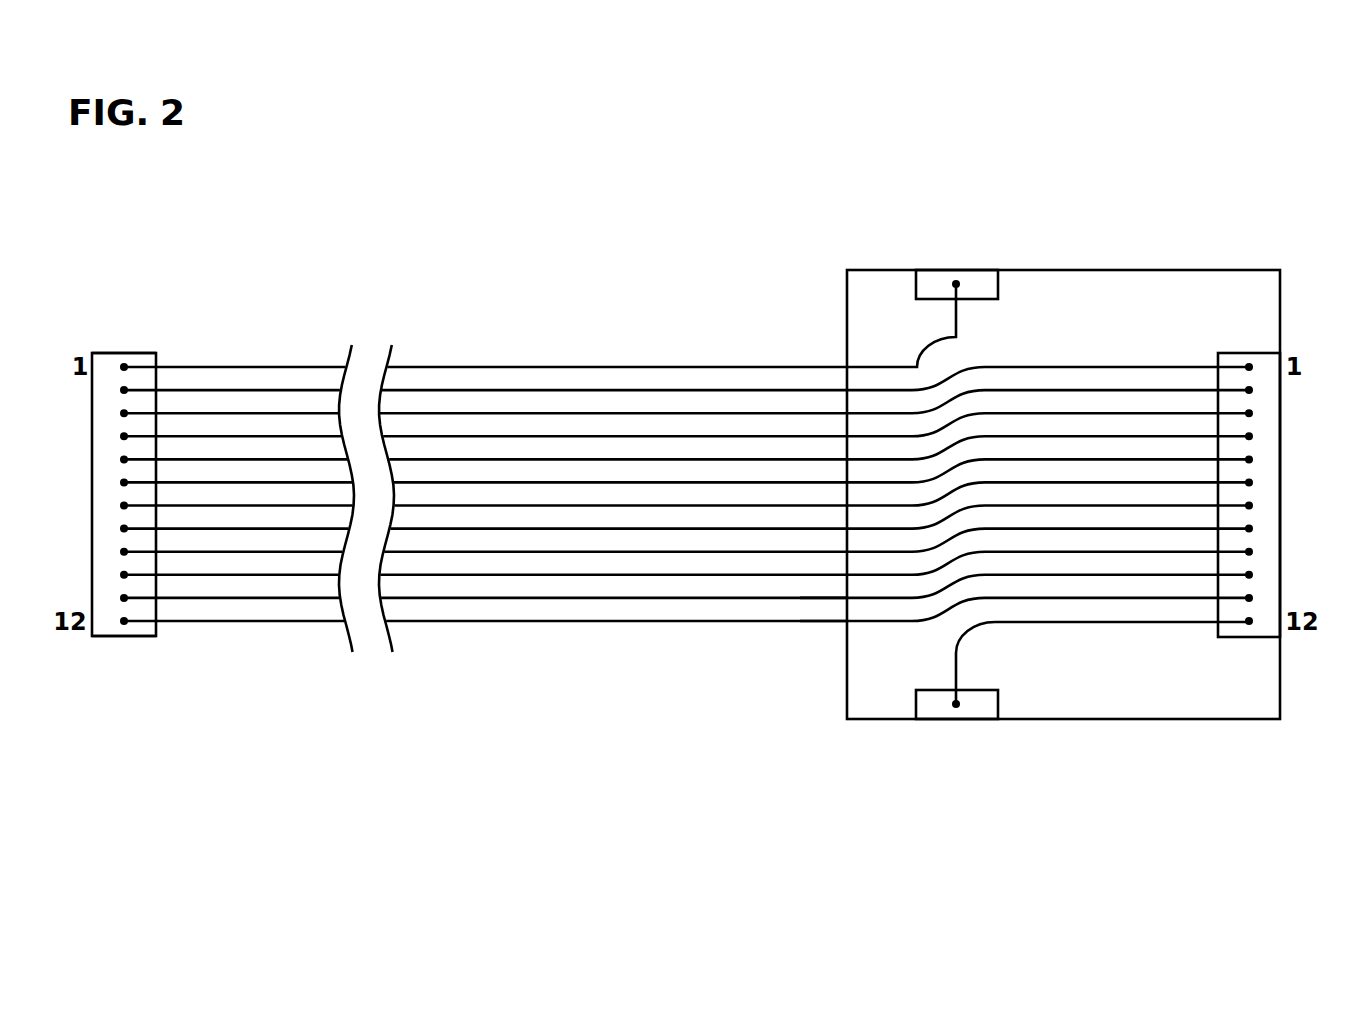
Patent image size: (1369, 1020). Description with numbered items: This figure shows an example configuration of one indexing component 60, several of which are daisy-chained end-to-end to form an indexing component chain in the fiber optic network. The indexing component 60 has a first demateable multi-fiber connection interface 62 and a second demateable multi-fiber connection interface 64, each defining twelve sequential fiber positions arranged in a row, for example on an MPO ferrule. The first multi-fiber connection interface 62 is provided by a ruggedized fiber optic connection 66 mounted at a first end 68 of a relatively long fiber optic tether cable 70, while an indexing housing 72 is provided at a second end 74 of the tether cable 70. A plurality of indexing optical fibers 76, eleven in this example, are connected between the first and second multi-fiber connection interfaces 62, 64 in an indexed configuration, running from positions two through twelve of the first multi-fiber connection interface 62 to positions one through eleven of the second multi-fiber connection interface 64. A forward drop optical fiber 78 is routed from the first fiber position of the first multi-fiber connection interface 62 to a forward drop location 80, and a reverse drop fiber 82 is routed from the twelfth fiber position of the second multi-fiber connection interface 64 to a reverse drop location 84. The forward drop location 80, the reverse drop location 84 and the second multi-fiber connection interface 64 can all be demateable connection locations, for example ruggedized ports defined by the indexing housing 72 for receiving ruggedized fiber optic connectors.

The indexing component 60 is at (469, 301).
The first demateable multi-fiber connection interface 62 is at (123, 636).
The second demateable multi-fiber connection interface 64 is at (1281, 503).
The ruggedized fiber optic connection 66 is at (123, 352).
The first end 68 is at (156, 636).
The fiber optic tether cable 70 is at (278, 356).
The indexing housing 72 is at (885, 719).
The second end 74 is at (838, 622).
The indexing optical fibers 76 is at (295, 622).
The forward drop optical fiber 78 is at (556, 367).
The forward drop location 80 is at (975, 270).
The reverse drop fiber 82 is at (1122, 622).
The reverse drop location 84 is at (973, 719).